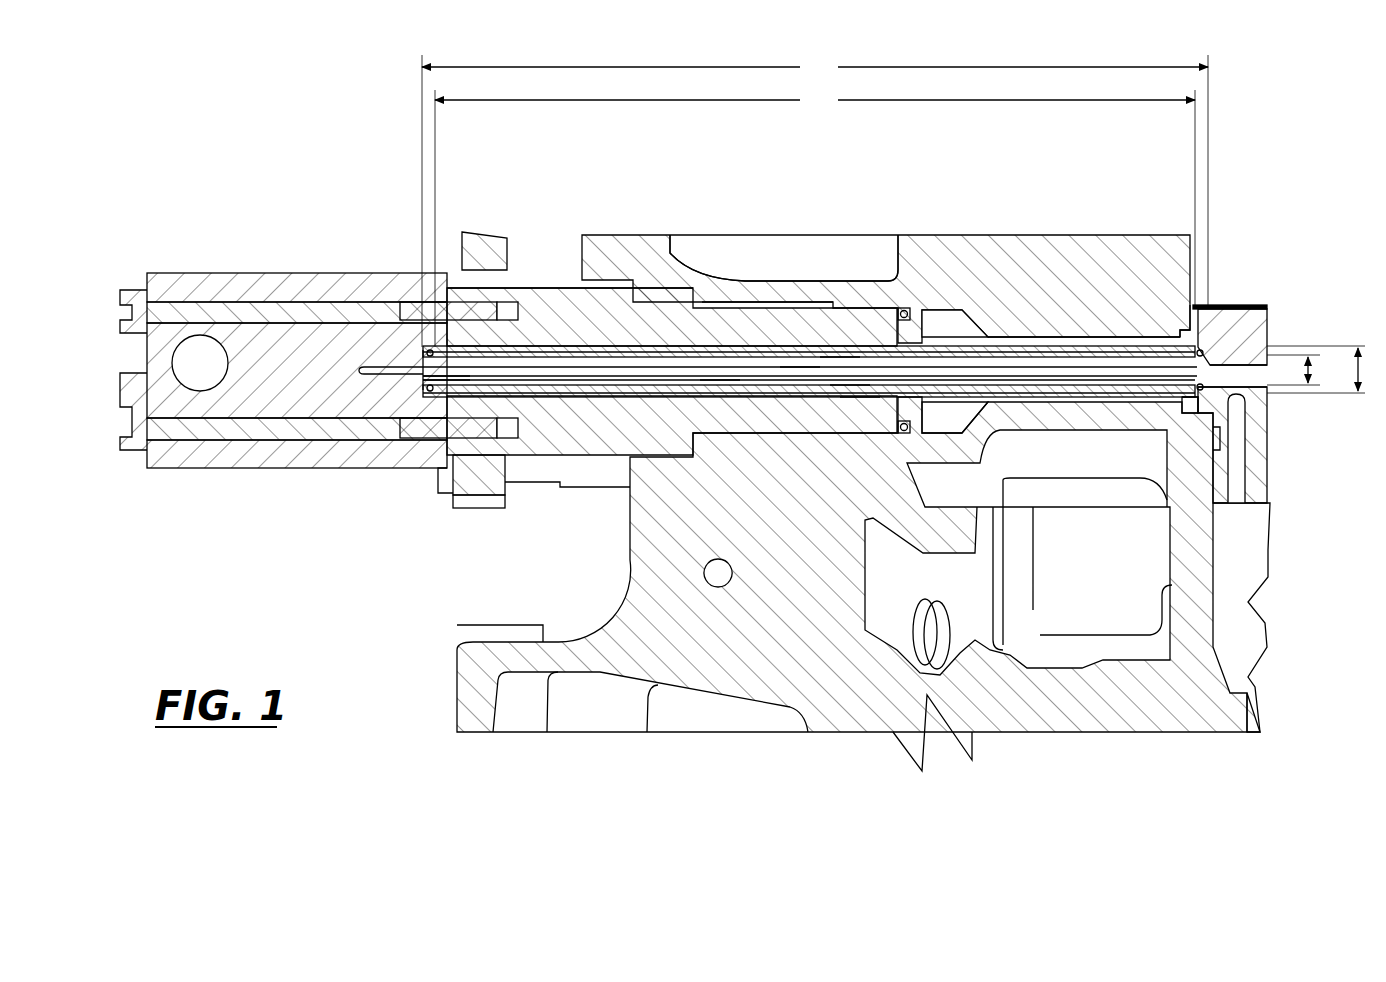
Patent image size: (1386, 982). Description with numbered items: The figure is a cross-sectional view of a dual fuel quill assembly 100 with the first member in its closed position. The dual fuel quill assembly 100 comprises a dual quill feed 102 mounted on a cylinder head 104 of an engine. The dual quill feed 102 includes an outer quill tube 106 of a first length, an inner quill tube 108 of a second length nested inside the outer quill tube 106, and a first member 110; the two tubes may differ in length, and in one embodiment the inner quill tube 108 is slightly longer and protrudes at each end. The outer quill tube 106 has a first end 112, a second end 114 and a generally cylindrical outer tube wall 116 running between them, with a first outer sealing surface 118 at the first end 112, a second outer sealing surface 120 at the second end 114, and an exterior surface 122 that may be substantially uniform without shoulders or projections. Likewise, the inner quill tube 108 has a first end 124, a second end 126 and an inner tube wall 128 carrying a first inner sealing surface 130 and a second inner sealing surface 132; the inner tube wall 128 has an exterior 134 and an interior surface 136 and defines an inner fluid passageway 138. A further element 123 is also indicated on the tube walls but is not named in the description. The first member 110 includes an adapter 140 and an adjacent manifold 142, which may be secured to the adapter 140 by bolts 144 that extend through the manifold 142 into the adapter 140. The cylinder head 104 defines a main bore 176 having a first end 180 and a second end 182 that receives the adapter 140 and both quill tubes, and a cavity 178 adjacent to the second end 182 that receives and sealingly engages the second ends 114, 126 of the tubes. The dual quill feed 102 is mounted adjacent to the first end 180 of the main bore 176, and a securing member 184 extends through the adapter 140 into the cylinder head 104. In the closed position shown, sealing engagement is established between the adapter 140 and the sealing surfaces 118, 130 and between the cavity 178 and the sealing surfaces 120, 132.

The dual fuel quill assembly 100 is at (234, 131).
The dual quill feed 102 is at (524, 282).
The cylinder head 104 is at (770, 617).
The outer quill tube 106 is at (893, 344).
The inner quill tube 108 is at (1056, 350).
The first member 110 is at (183, 473).
The first end 112 is at (433, 348).
The second end 114 is at (1207, 346).
The outer tube wall 116 is at (790, 360).
The first outer sealing surface 118 is at (431, 349).
The second outer sealing surface 120 is at (1198, 352).
The exterior surface 122 is at (748, 280).
The tube wall 123 is at (840, 358).
The first end 124 is at (420, 378).
The second end 126 is at (1207, 395).
The inner tube wall 128 is at (721, 382).
The first inner sealing surface 130 is at (423, 382).
The second inner sealing surface 132 is at (1237, 380).
The exterior 134 is at (850, 388).
The interior surface 136 is at (858, 396).
The inner fluid passageway 138 is at (798, 366).
The adapter 140 is at (553, 282).
The manifold 142 is at (186, 268).
The bolts 144 is at (138, 290).
The main bore 176 is at (940, 328).
The cavity 178 is at (1204, 363).
The first end 180 is at (620, 238).
The second end 182 is at (1172, 350).
The securing member 184 is at (540, 465).